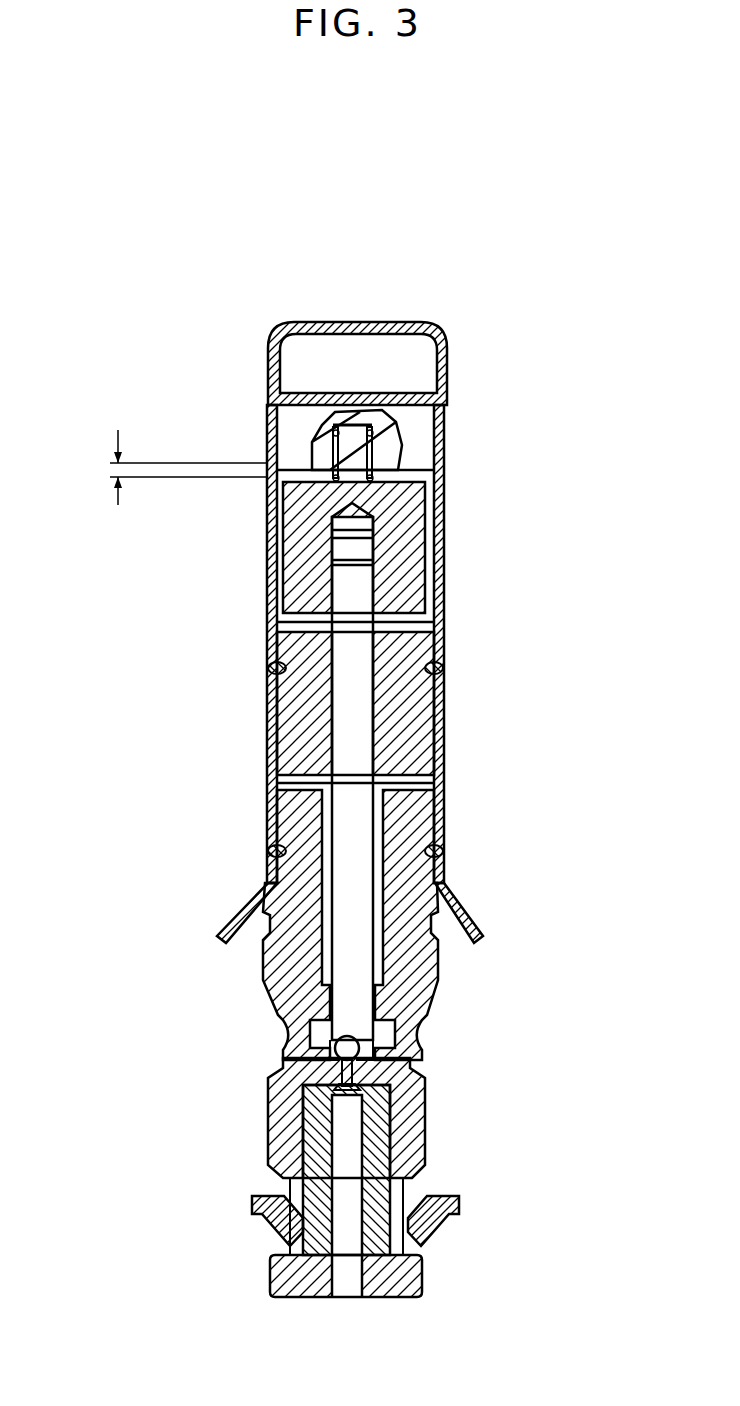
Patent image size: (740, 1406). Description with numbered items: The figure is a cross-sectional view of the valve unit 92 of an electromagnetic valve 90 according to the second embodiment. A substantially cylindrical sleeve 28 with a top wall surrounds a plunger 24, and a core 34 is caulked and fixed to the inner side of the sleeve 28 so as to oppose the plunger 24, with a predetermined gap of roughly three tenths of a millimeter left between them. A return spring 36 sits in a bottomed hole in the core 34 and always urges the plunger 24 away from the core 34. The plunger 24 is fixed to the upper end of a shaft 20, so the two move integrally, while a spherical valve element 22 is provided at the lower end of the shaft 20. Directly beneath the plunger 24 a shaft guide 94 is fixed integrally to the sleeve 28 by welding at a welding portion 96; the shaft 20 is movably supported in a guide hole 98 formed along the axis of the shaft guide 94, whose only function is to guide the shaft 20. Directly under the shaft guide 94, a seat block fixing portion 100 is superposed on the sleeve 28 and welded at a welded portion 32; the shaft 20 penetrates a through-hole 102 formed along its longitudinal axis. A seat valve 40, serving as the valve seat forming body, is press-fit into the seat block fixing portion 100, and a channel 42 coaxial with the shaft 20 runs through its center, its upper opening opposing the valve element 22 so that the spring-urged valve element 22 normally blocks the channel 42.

The electromagnetic valve 90 is at (217, 356).
The valve unit 92 is at (313, 853).
The sleeve 28 is at (445, 617).
The core 34 is at (422, 428).
The return spring 36 is at (326, 450).
The plunger 24 is at (417, 543).
The shaft 20 is at (343, 753).
The shaft guide 94 is at (283, 708).
The guide hole 98 is at (280, 655).
The welding portion 96 is at (445, 668).
The welded portion 32 is at (440, 850).
The seat block fixing portion 100 is at (265, 965).
The through-hole 102 is at (322, 905).
The valve element 22 is at (337, 1045).
The seat valve 40 is at (300, 1285).
The channel 42 is at (347, 1250).